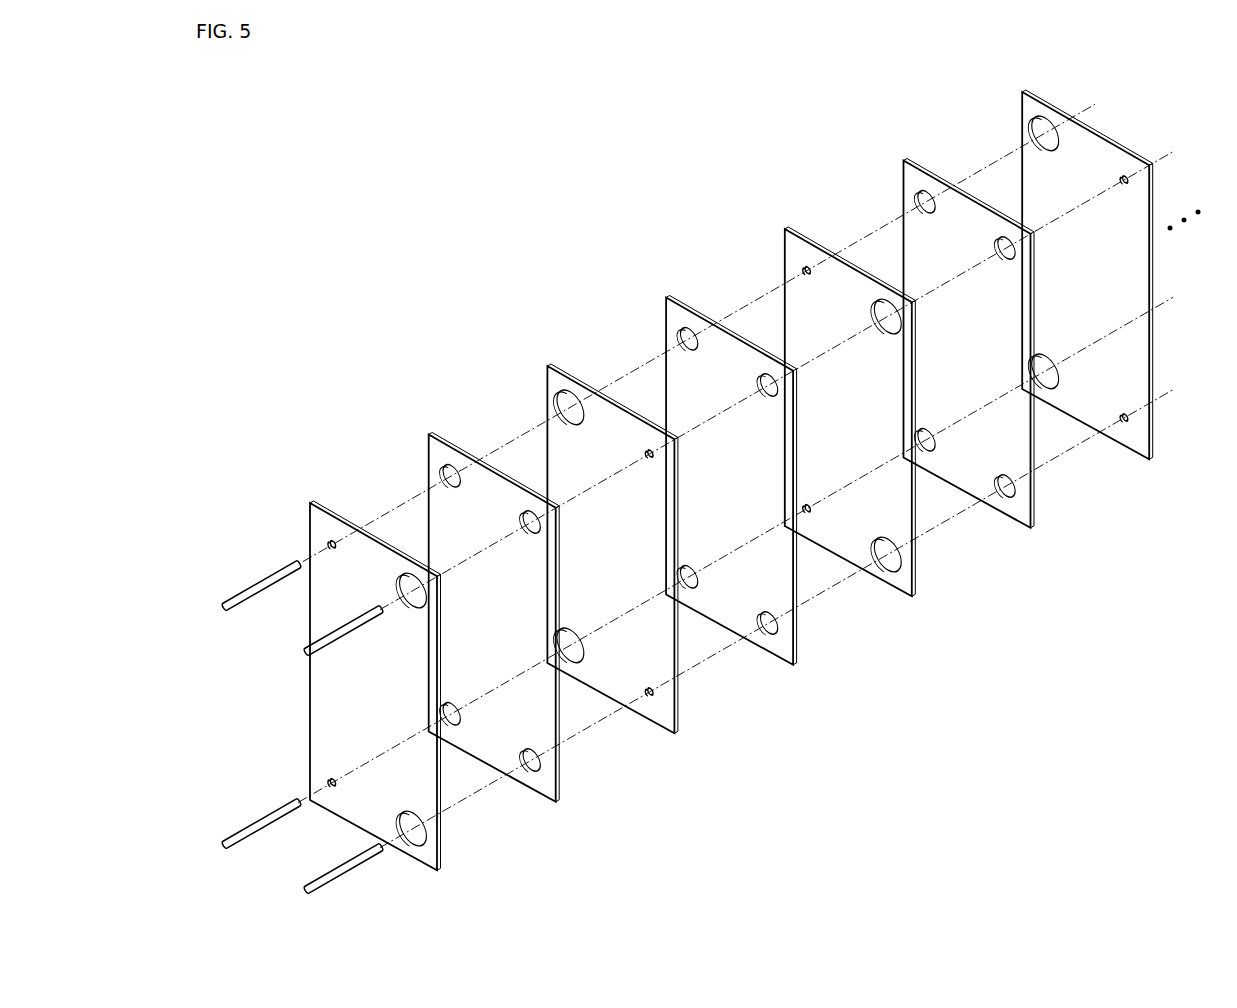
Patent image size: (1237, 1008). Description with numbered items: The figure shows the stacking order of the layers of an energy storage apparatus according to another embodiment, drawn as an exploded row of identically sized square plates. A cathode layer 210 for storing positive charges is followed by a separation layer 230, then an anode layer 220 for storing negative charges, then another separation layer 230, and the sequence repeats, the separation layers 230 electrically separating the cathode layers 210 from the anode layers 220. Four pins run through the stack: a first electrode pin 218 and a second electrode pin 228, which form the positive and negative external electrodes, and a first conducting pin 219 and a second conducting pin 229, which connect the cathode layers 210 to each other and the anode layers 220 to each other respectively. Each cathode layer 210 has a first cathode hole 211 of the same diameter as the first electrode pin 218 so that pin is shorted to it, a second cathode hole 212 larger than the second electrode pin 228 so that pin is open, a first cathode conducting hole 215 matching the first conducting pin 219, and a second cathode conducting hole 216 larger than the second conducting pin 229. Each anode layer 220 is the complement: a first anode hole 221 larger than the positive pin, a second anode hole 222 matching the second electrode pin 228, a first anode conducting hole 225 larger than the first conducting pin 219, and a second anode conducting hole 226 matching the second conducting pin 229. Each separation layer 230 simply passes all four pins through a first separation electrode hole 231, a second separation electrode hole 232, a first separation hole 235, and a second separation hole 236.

The cathode layer 210 is at (316, 693).
The first cathode hole 211 is at (330, 541).
The second cathode hole 212 is at (410, 582).
The first cathode conducting hole 215 is at (320, 781).
The second cathode conducting hole 216 is at (424, 836).
The first electrode pin 218 is at (263, 585).
The first conducting pin 219 is at (258, 826).
The second electrode pin 228 is at (320, 642).
The second conducting pin 229 is at (337, 873).
The anode layer 220 is at (556, 432).
The first anode hole 221 is at (563, 398).
The second anode hole 222 is at (647, 444).
The first anode conducting hole 225 is at (577, 658).
The second anode conducting hole 226 is at (660, 697).
The separation layer 230 is at (436, 497).
The first separation electrode hole 231 is at (445, 469).
The second separation electrode hole 232 is at (527, 512).
The first separation hole 235 is at (452, 724).
The second separation hole 236 is at (541, 768).